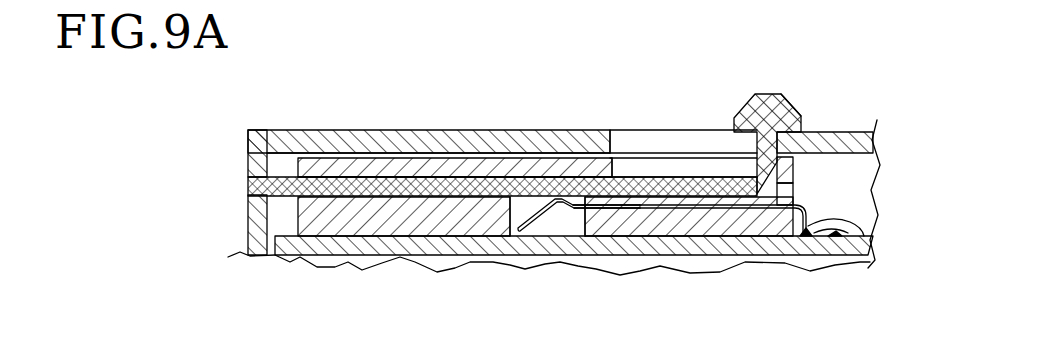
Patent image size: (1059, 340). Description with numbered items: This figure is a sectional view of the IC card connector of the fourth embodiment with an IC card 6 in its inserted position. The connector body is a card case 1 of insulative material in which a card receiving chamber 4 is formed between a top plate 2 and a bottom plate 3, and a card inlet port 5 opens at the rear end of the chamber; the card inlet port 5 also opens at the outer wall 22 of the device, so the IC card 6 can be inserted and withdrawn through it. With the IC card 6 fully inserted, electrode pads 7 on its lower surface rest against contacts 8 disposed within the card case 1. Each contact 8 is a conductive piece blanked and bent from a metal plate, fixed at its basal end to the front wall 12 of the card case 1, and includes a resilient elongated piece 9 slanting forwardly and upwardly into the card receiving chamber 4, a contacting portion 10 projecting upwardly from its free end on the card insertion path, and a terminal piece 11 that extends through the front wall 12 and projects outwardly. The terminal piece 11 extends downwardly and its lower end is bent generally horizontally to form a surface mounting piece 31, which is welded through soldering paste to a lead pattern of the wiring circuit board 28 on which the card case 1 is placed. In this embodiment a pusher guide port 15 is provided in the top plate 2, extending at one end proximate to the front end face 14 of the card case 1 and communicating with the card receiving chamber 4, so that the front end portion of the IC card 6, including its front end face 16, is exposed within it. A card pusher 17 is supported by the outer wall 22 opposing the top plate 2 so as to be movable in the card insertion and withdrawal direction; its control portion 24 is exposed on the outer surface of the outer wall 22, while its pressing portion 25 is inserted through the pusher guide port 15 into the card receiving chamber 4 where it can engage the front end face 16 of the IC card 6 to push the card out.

The card case 1 is at (360, 155).
The top plate 2 is at (412, 166).
The bottom plate 3 is at (412, 222).
The card receiving chamber 4 is at (518, 178).
The card inlet port 5 is at (247, 173).
The IC card 6 is at (470, 184).
The electrode pads 7 is at (553, 197).
The contacts 8 is at (645, 209).
The resilient elongated piece 9 is at (625, 206).
The contacting portion 10 is at (555, 206).
The terminal piece 11 is at (852, 236).
The front wall 12 is at (781, 222).
The front end face 14 is at (795, 190).
The pusher guide port 15 is at (680, 167).
The front end face of the IC card 16 is at (733, 203).
The card pusher 17 is at (790, 100).
The outer wall 22 is at (305, 137).
The control portion 24 is at (748, 100).
The pressing portion 25 is at (820, 132).
The wiring circuit board 28 is at (478, 255).
The surface mounting piece 31 is at (812, 237).